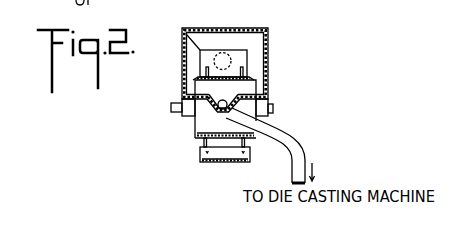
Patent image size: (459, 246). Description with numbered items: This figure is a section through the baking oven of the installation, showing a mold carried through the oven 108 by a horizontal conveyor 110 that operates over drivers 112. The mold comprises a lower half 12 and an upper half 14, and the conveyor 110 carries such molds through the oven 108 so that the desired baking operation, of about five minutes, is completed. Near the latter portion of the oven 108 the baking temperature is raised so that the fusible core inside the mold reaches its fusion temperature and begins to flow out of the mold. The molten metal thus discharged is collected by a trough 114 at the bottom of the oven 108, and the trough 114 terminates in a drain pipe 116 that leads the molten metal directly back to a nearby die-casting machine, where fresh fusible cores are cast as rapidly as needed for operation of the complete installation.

The oven 108 is at (268, 42).
The lower half 12 is at (200, 67).
The upper half 14 is at (183, 30).
The horizontal conveyor 110 is at (240, 85).
The drivers 112 is at (208, 115).
The trough 114 is at (273, 110).
The drain pipe 116 is at (298, 153).